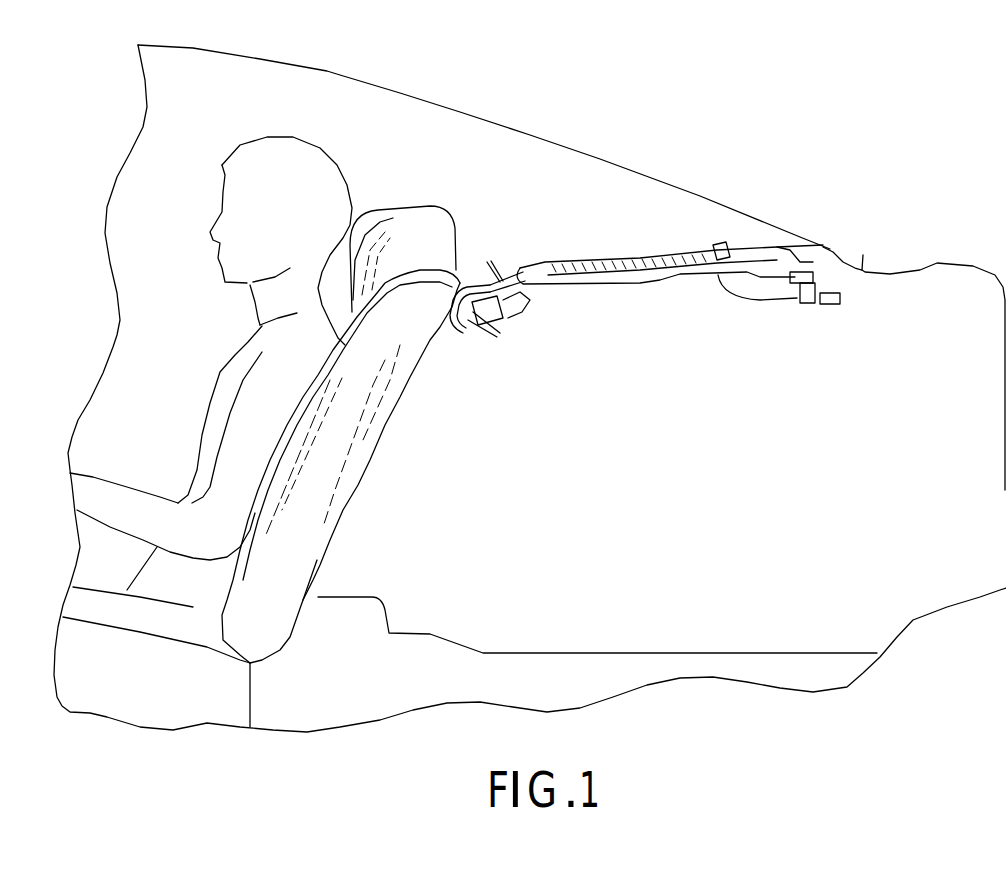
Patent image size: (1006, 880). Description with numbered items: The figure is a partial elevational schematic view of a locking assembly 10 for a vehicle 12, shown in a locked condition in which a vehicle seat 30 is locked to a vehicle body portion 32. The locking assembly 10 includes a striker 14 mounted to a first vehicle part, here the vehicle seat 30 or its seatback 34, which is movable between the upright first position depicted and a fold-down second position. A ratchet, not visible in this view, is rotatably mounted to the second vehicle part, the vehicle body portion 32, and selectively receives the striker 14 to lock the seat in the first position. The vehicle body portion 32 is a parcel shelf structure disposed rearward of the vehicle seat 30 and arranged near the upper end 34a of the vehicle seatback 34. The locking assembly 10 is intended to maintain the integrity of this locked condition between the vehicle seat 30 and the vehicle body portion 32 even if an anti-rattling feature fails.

The locking assembly 10 is at (475, 358).
The vehicle 12 is at (487, 133).
The striker 14 is at (450, 340).
The vehicle seat 30 is at (116, 676).
The vehicle body portion 32 is at (477, 290).
The vehicle seatback 34 is at (343, 467).
The upper end 34a is at (423, 285).